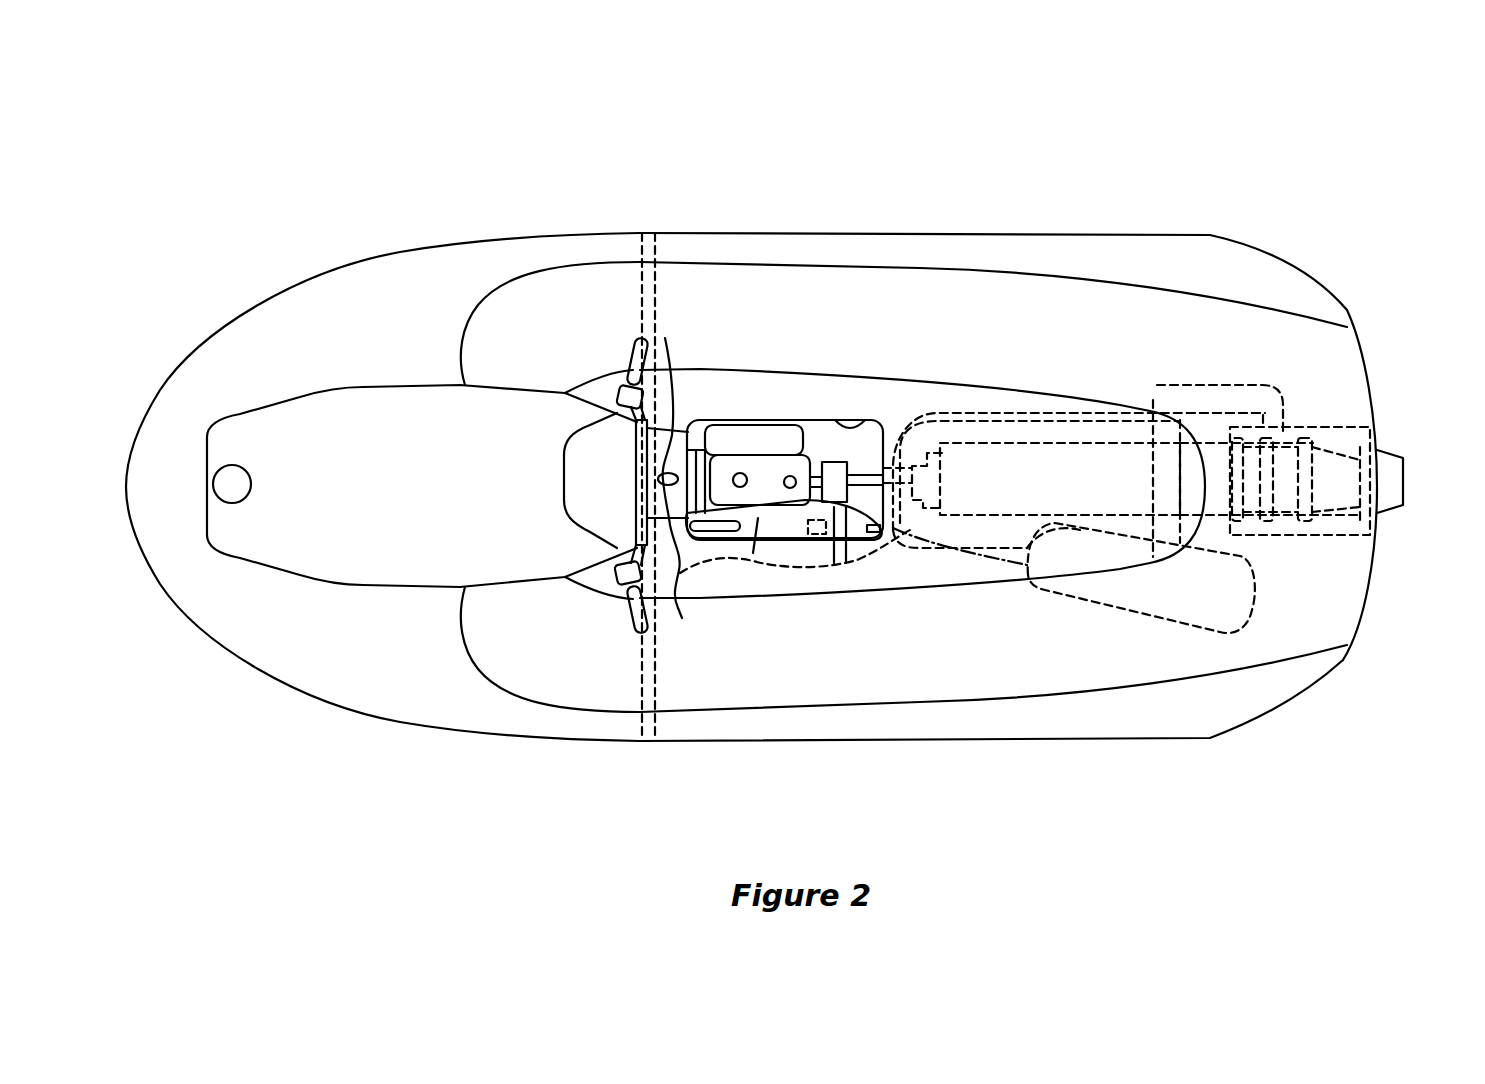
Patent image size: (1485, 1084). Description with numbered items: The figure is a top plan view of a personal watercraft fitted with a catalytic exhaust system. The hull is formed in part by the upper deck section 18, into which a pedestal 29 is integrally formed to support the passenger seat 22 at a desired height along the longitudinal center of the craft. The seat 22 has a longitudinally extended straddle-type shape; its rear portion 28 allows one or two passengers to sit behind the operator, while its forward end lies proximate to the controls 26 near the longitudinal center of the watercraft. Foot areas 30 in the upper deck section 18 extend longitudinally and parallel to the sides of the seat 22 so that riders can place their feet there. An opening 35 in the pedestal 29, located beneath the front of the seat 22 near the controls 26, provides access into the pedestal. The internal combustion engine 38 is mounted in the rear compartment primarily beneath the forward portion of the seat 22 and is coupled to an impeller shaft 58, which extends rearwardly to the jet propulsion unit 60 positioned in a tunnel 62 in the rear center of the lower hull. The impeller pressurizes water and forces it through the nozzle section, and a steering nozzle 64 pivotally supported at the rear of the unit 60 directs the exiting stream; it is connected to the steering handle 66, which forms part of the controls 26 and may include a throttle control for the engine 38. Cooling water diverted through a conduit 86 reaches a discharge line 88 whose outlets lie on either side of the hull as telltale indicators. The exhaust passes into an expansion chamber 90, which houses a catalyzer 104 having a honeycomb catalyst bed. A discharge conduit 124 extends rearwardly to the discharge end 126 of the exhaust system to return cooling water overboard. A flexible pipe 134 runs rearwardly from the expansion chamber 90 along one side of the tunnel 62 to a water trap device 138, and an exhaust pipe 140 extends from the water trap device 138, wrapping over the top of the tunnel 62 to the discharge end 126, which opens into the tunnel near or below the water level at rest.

The upper deck section 18 is at (357, 563).
The passenger seat 22 is at (890, 380).
The controls 26 is at (605, 390).
The rear portion 28 is at (1085, 397).
The pedestal 29 is at (792, 380).
The foot areas 30 is at (1018, 295).
The opening 35 is at (840, 425).
The internal combustion engine 38 is at (760, 477).
The impeller shaft 58 is at (912, 480).
The jet propulsion unit 60 is at (1113, 440).
The tunnel 62 is at (1380, 415).
The steering nozzle 64 is at (1397, 467).
The steering handle 66 is at (618, 627).
The conduit 86 is at (710, 545).
The discharge line 88 is at (655, 272).
The expansion chamber 90 is at (780, 528).
The catalyzer 104 is at (810, 540).
The discharge conduit 124 is at (930, 407).
The discharge end 126 is at (1293, 430).
The flexible pipe 134 is at (950, 550).
The water trap device 138 is at (1147, 617).
The exhaust pipe 140 is at (1217, 383).